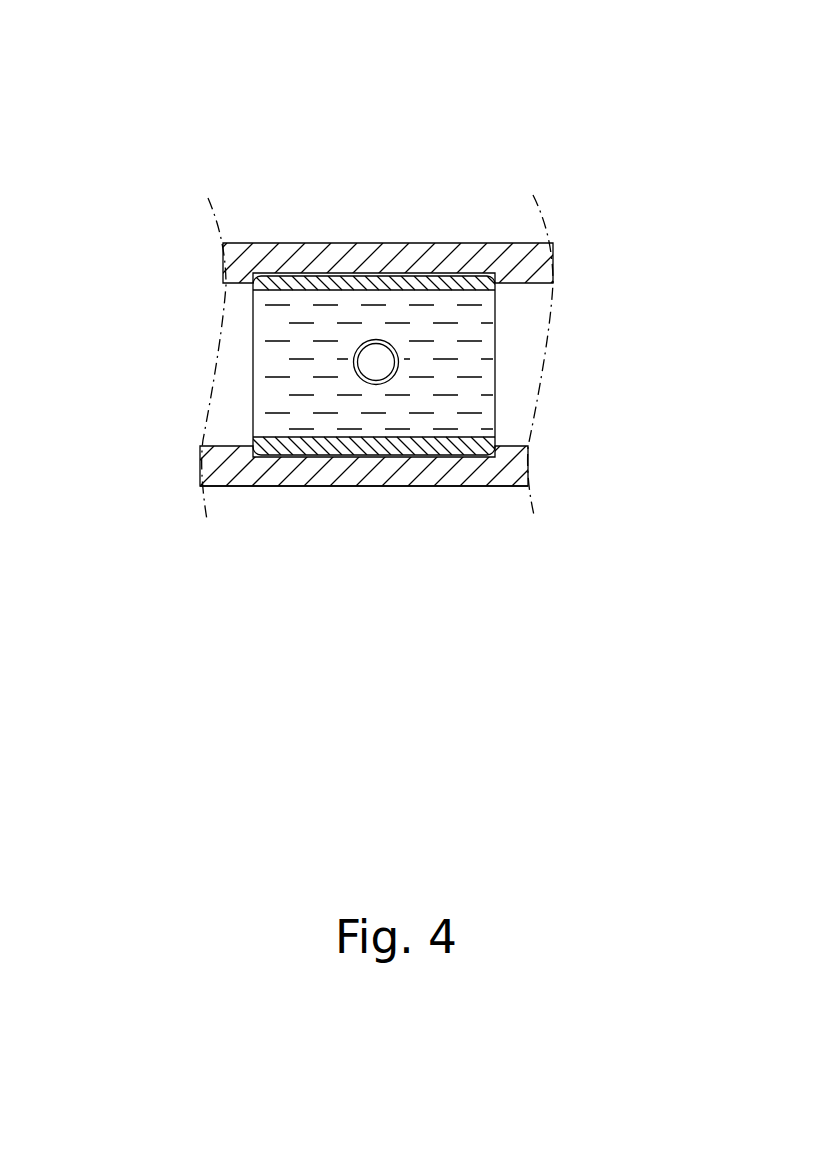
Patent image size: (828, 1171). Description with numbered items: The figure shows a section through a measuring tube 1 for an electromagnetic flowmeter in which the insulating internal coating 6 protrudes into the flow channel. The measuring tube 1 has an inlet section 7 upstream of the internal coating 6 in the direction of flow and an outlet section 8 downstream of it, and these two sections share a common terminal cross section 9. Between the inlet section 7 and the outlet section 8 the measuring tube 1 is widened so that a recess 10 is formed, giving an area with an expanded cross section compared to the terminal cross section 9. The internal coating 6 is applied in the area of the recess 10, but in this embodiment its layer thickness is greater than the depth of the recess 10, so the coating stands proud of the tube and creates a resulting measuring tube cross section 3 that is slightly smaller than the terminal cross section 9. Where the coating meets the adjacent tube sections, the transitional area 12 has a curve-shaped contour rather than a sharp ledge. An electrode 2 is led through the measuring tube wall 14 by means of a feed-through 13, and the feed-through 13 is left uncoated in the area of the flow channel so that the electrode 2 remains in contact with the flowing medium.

The measuring tube 1 is at (497, 173).
The electrode 2 is at (378, 362).
The resulting measuring tube cross section 3 is at (323, 392).
The internal coating 6 is at (303, 280).
The inlet section 7 is at (240, 287).
The outlet section 8 is at (518, 437).
The terminal cross section 9 is at (242, 360).
The recess 10 is at (383, 486).
The transitional area 12 is at (254, 455).
The feed-through 13 is at (398, 358).
The measuring tube wall 14 is at (455, 486).